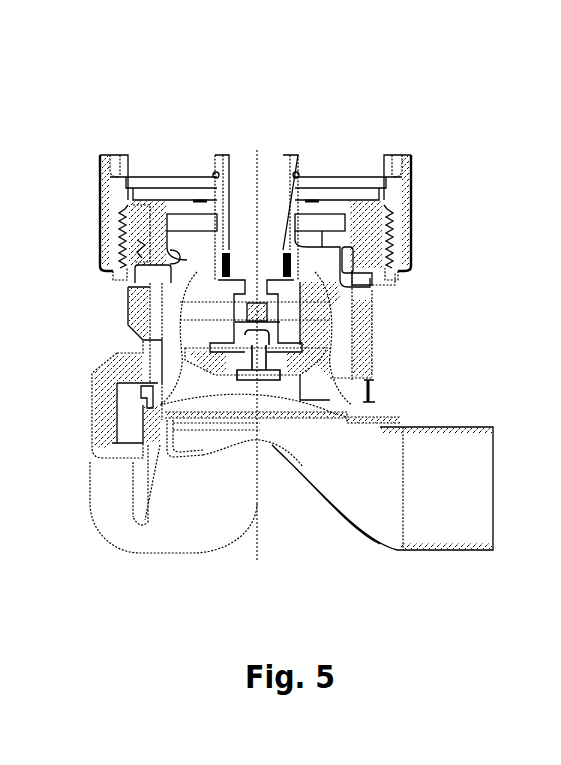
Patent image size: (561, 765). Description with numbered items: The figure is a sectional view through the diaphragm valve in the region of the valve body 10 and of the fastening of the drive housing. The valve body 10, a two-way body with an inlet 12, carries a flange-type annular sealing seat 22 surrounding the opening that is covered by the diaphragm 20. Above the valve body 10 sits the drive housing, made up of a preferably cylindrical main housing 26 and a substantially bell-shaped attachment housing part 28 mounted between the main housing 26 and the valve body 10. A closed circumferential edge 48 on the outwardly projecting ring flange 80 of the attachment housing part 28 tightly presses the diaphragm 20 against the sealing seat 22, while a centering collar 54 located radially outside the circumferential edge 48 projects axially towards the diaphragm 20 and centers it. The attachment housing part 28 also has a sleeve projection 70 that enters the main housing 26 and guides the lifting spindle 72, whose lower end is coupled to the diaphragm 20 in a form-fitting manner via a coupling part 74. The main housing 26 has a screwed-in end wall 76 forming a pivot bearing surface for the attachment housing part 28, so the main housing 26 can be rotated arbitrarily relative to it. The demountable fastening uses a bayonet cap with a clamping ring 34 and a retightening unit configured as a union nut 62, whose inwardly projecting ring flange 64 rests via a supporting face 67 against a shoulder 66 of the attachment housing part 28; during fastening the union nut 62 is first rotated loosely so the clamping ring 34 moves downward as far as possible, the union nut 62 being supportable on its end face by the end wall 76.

The valve body 10 is at (452, 552).
The inlet 12 is at (468, 503).
The diaphragm 20 is at (347, 405).
The sealing seat 22 is at (157, 412).
The main housing 26 is at (410, 172).
The attachment housing part 28 is at (340, 357).
The clamping ring 34 is at (137, 363).
The circumferential edge 48 is at (156, 402).
The centering collar 54 is at (377, 388).
The union nut 62 is at (137, 305).
The ring flange 64 is at (357, 277).
The shoulder 66 is at (162, 282).
The supporting face 67 is at (367, 287).
The sleeve projection 70 is at (290, 172).
The lifting spindle 72 is at (248, 180).
The coupling part 74 is at (220, 350).
The end wall 76 is at (138, 225).
The ring flange 80 is at (152, 391).